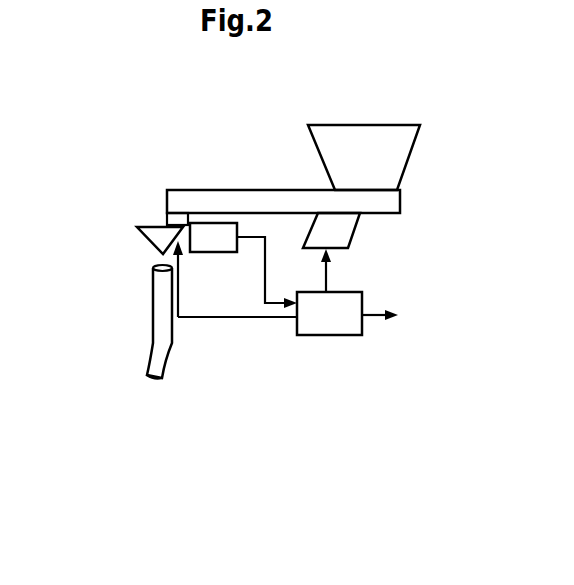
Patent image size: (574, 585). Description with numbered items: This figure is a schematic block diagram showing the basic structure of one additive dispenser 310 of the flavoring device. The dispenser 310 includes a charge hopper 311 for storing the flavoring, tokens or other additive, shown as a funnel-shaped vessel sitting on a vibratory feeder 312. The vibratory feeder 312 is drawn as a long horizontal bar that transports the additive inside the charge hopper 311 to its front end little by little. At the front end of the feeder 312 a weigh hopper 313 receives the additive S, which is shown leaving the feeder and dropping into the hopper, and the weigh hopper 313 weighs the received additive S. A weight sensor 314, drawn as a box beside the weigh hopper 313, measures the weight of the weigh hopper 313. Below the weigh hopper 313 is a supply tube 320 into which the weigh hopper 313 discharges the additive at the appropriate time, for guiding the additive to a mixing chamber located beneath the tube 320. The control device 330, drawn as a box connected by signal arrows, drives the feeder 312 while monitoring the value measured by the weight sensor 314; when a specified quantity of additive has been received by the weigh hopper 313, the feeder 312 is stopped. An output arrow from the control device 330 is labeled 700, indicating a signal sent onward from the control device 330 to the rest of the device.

The dispenser 310 is at (262, 131).
The charge hopper 311 is at (362, 135).
The vibratory feeder 312 is at (248, 202).
The weigh hopper 313 is at (143, 233).
The weight sensor 314 is at (207, 228).
The supply tube 320 is at (160, 353).
The control device 330 is at (327, 327).
The output signal 700 is at (401, 316).
The additive S is at (163, 220).